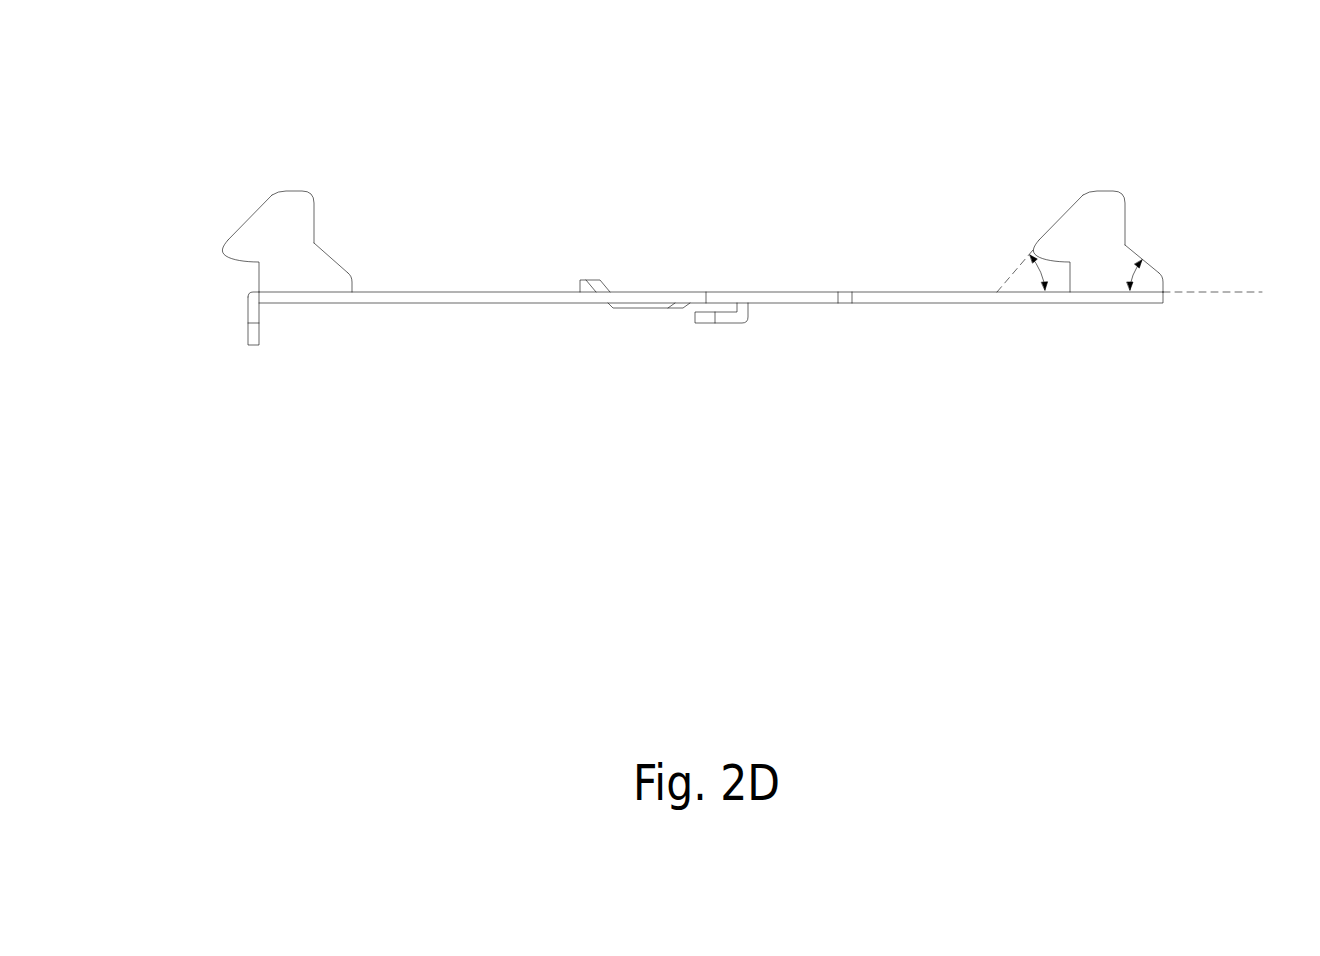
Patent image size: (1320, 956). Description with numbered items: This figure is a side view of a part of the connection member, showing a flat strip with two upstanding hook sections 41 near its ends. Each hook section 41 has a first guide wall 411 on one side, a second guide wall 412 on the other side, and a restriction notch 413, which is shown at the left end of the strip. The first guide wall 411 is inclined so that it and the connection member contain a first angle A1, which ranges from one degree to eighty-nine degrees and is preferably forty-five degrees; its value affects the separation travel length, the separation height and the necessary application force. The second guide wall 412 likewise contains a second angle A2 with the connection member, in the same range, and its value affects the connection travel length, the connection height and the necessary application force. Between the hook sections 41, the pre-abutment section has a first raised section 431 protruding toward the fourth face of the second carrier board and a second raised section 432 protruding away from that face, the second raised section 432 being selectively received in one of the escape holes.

The hook section 41 is at (283, 208).
The first guide wall 411 is at (332, 258).
The second guide wall 412 is at (245, 218).
The restriction notch 413 is at (258, 280).
The first raised section 431 is at (580, 285).
The second raised section 432 is at (640, 308).
The first angle A1 is at (1163, 275).
The second angle A2 is at (1030, 250).